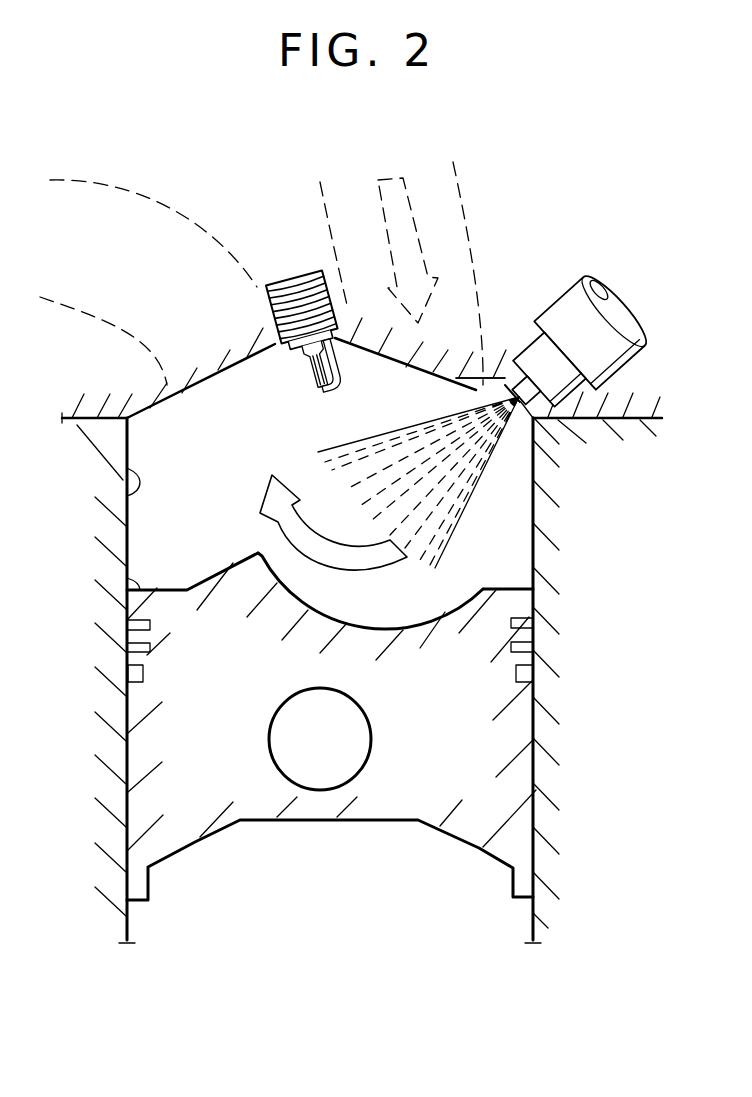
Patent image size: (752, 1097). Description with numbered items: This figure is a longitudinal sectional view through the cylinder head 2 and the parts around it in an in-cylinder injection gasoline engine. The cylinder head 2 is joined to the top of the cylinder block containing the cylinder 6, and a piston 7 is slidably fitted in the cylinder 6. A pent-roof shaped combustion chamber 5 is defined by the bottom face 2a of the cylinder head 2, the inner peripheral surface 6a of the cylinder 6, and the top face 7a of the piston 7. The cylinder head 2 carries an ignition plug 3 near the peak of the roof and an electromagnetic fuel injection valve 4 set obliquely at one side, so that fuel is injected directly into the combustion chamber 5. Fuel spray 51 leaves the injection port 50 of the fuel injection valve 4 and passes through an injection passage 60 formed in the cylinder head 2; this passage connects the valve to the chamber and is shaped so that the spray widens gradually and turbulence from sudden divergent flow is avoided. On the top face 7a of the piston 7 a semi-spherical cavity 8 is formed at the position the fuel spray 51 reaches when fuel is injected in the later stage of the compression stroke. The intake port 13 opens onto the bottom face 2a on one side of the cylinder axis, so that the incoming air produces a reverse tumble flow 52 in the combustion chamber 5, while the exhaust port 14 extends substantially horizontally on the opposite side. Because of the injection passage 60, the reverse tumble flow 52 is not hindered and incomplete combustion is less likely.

The cylinder head 2 is at (639, 413).
The bottom face of the cylinder head 2a is at (232, 378).
The ignition plug 3 is at (293, 280).
The electromagnetic fuel injection valve 4 is at (615, 347).
The combustion chamber 5 is at (259, 451).
The cylinder 6 is at (589, 634).
The inner peripheral surface of the cylinder 6a is at (126, 490).
The piston 7 is at (431, 793).
The top face of the piston 7a is at (125, 588).
The semi-spherical cavity 8 is at (401, 612).
The intake port 13 is at (451, 228).
The exhaust port 14 is at (97, 292).
The injection port 50 is at (515, 412).
The fuel spray 51 is at (473, 500).
The reverse tumble flow 52 is at (277, 525).
The injection passage 60 is at (460, 379).